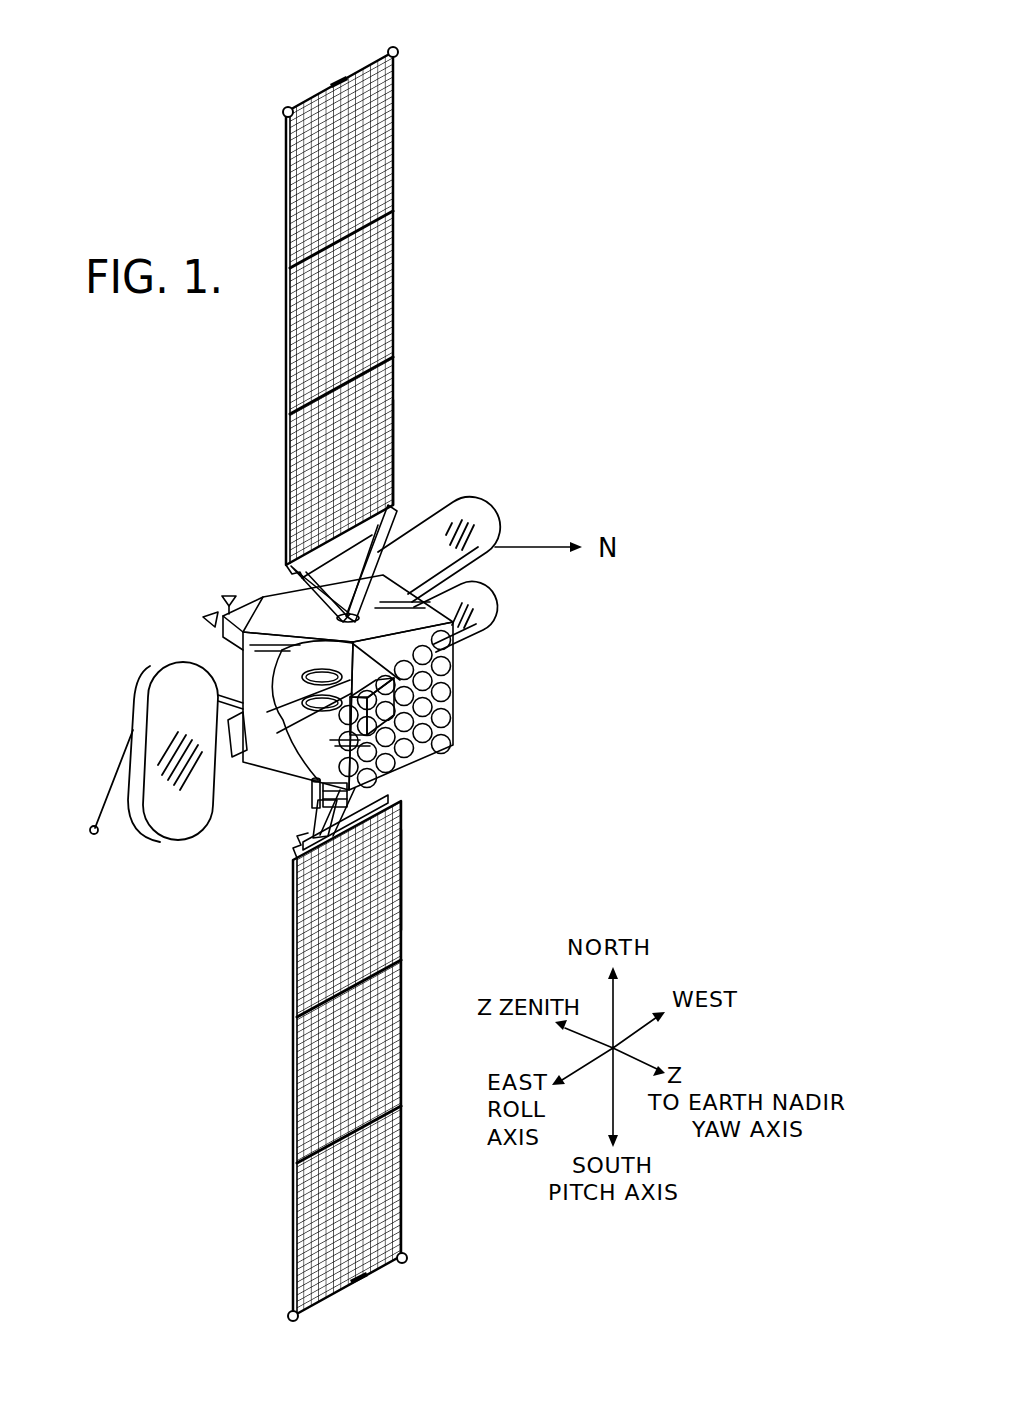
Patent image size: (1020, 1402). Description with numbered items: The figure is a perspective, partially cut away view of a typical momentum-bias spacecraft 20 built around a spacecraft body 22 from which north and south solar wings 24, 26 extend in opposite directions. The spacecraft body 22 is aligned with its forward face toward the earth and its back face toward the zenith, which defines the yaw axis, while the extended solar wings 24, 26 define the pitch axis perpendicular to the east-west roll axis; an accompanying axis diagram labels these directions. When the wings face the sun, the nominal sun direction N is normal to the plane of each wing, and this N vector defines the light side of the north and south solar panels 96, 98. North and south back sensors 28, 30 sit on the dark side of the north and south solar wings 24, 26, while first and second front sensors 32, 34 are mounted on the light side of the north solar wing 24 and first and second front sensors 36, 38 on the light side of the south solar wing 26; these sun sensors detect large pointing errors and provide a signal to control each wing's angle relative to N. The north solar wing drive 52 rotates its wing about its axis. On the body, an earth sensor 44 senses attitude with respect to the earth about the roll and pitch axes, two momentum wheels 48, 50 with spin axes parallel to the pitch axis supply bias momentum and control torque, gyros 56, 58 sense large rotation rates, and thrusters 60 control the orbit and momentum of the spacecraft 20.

The momentum-bias spacecraft 20 is at (494, 36).
The spacecraft body 22 is at (453, 718).
The north solar wing 24 is at (395, 342).
The south solar wing 26 is at (395, 1078).
The north back sensor 28 is at (333, 83).
The south back sensor 30 is at (359, 1283).
The first front sensor 32 is at (393, 46).
The second front sensor 34 is at (283, 109).
The first front sensor 36 is at (410, 1257).
The second front sensor 38 is at (287, 1316).
The earth sensor 44 is at (302, 792).
The momentum wheel 48 is at (306, 709).
The momentum wheel 50 is at (302, 684).
The north solar wing drive 52 is at (338, 613).
The gyro 56 is at (453, 683).
The gyro 58 is at (458, 588).
The thrusters 60 is at (215, 618).
The north solar panel 96 is at (393, 448).
The south solar panel 98 is at (395, 880).